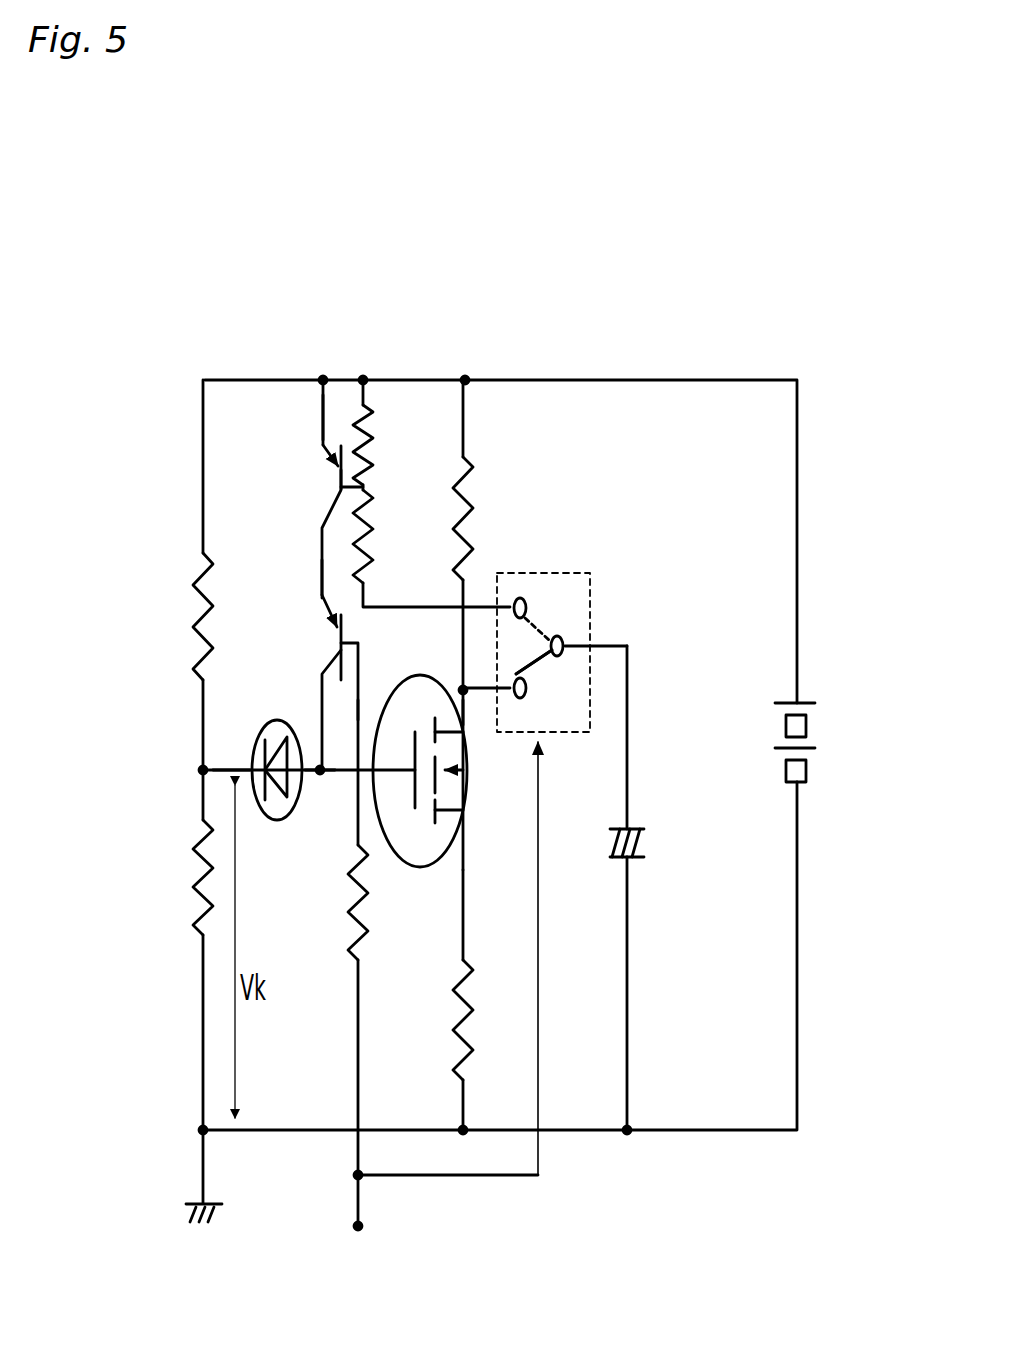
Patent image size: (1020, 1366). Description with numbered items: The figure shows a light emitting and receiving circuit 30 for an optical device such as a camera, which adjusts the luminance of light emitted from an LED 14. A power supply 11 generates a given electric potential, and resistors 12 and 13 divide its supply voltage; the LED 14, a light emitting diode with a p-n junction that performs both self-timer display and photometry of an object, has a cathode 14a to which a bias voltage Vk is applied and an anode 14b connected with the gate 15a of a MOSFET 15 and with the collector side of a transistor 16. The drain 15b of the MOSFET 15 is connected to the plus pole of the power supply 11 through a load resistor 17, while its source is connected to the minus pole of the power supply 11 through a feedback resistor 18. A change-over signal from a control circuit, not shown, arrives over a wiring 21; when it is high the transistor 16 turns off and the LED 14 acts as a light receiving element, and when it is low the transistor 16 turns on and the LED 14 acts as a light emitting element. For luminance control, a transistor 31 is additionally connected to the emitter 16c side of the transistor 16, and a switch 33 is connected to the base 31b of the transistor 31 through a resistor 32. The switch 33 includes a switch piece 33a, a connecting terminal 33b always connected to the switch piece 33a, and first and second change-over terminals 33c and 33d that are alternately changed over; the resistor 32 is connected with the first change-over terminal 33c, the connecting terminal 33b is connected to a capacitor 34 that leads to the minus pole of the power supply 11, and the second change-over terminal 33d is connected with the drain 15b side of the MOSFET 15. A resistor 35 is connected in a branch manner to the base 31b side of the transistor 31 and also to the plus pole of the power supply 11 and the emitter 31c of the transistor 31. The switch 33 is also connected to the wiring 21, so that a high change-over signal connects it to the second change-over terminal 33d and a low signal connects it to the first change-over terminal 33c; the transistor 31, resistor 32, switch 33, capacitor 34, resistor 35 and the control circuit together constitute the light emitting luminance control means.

The power supply 11 is at (808, 703).
The resistor 12 is at (201, 612).
The resistor 13 is at (199, 912).
The LED 14 is at (278, 820).
The cathode 14a is at (229, 757).
The anode 14b is at (320, 774).
The MOSFET 15 is at (422, 848).
The gate 15a is at (365, 712).
The drain 15b is at (464, 710).
The transistor 16 is at (318, 631).
The emitter 16c is at (323, 592).
The load resistor 17 is at (470, 488).
The feedback resistor 18 is at (470, 1006).
The wiring 21 is at (360, 1082).
The light emitting and receiving circuit 30 is at (488, 346).
The transistor 31 is at (348, 462).
The base 31b is at (349, 492).
The emitter 31c is at (325, 432).
The resistor 32 is at (375, 522).
The switch 33 is at (508, 823).
The switch piece 33a is at (540, 662).
The connecting terminal 33b is at (560, 636).
The first change-over terminal 33c is at (518, 598).
The second change-over terminal 33d is at (520, 700).
The capacitor 34 is at (637, 830).
The resistor 35 is at (374, 420).